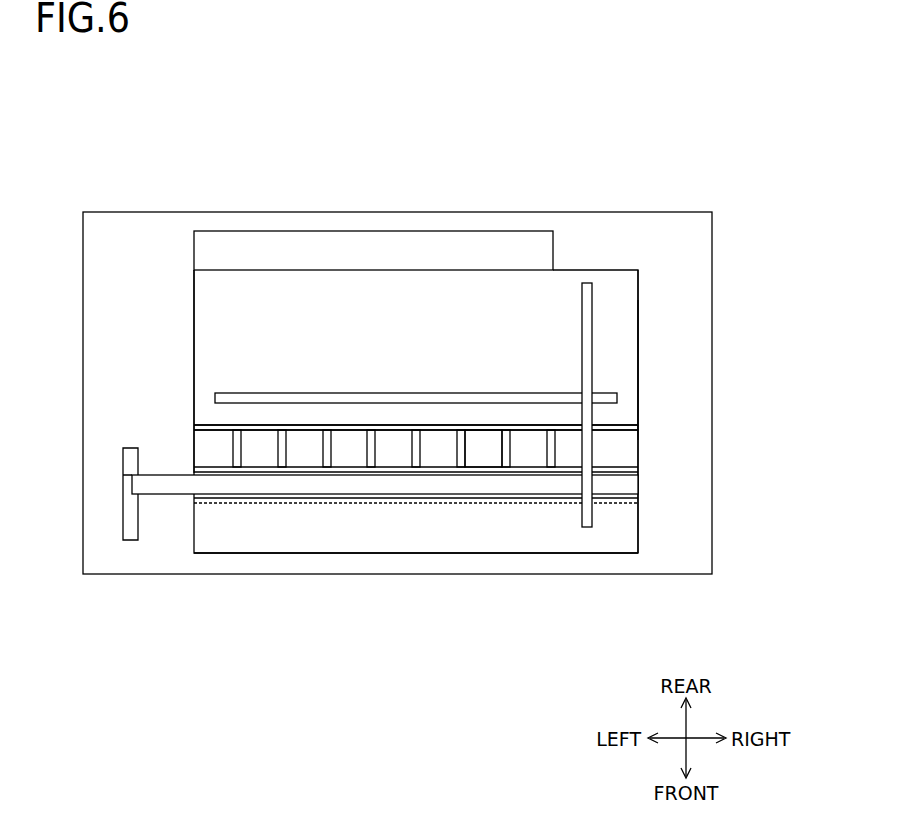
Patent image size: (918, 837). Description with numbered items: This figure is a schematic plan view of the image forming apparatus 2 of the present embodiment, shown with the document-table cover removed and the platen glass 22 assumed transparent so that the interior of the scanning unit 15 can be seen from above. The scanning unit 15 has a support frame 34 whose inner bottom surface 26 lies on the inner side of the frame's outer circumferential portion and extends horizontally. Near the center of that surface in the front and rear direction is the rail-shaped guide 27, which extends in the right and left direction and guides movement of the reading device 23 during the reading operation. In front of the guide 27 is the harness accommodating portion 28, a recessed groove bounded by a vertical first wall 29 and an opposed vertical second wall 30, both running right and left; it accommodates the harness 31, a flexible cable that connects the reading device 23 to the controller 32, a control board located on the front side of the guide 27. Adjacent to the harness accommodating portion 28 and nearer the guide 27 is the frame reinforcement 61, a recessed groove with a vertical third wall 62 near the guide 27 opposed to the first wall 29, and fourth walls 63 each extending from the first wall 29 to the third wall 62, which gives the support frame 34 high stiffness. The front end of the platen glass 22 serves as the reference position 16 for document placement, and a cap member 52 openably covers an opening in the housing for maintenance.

The image forming apparatus 2 is at (689, 152).
The cap member 52 is at (385, 252).
The scanning unit 15 is at (609, 268).
The platen glass 22 is at (194, 333).
The support frame 34 is at (639, 335).
The inner bottom surface 26 is at (628, 368).
The guide 27 is at (617, 400).
The frame reinforcement 61 is at (335, 424).
The third wall 62 is at (530, 425).
The fourth walls 63 is at (285, 448).
The first wall 29 is at (484, 463).
The harness 31 is at (393, 487).
The controller 32 is at (130, 527).
The harness accommodating portion 28 is at (452, 503).
The second wall 30 is at (508, 507).
The reading device 23 is at (586, 301).
The reference position 16 is at (642, 553).